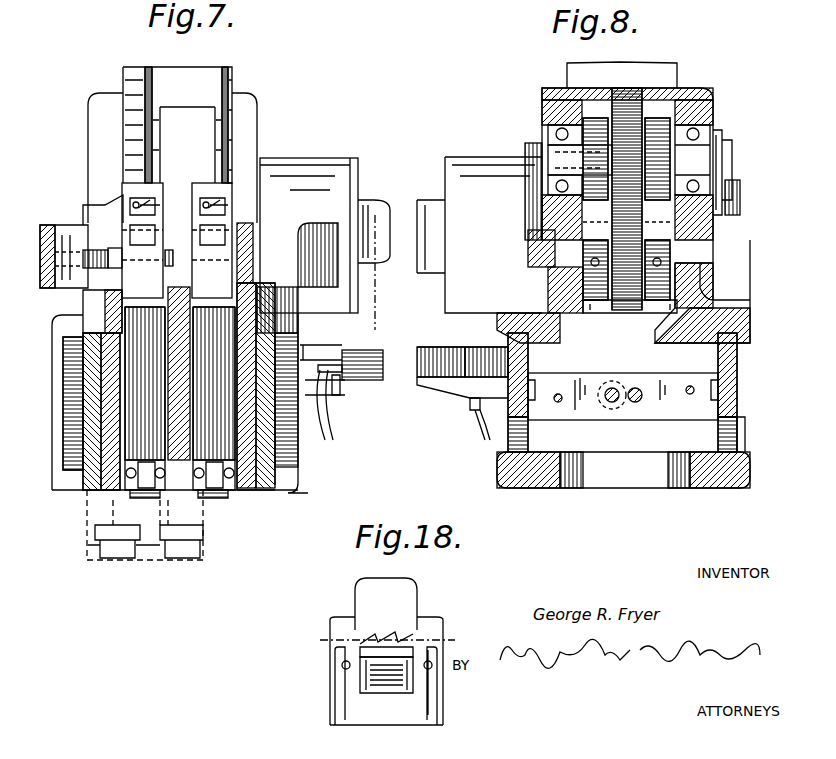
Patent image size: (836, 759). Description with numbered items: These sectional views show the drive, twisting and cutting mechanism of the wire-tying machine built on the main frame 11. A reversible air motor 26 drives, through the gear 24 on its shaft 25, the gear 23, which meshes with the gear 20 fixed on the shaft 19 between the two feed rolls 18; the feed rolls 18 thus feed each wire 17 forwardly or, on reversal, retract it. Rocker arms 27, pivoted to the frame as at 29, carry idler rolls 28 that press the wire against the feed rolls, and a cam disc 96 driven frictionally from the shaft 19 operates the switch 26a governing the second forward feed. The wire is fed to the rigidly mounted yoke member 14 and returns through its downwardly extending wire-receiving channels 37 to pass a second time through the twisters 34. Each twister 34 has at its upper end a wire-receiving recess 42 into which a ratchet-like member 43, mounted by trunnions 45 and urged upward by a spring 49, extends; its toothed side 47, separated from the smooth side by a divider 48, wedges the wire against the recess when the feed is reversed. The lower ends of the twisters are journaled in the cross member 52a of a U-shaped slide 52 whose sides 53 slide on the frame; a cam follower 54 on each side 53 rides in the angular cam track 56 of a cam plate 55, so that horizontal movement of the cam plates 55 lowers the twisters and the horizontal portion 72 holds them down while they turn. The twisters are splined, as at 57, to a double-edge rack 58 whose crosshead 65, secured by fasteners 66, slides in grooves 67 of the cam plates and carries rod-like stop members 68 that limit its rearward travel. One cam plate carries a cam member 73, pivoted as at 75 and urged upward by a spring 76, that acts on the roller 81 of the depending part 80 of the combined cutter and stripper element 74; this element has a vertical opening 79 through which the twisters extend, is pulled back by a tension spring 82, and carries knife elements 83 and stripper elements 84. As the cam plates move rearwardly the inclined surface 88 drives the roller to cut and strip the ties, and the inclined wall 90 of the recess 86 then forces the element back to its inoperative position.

In FIG. 7, the main frame 11 is at (56, 470).
In FIG. 8, the main frame 11 is at (728, 478).
In FIG. 7, the yoke member 14 is at (232, 80).
In FIG. 8, the yoke member 14 is at (670, 76).
In FIG. 18, the wire 17 is at (330, 625).
In FIG. 8, the feed rolls 18 is at (592, 118).
In FIG. 8, the shaft 19 is at (560, 157).
In FIG. 8, the gear 20 is at (628, 100).
In FIG. 8, the gear 23 is at (626, 300).
In FIG. 8, the gear 24 is at (600, 270).
In FIG. 8, the shaft 25 is at (555, 270).
In FIG. 7, the air motor 26 is at (318, 170).
In FIG. 8, the air motor 26 is at (464, 162).
In FIG. 8, the switch 26a is at (725, 137).
In FIG. 8, the rocker arms 27 is at (530, 256).
In FIG. 8, the idler rolls 28 is at (577, 315).
In FIG. 8, the pivot 29 is at (525, 205).
In FIG. 7, the twisters 34 is at (267, 274).
In FIG. 18, the twisters 34 is at (340, 712).
In FIG. 7, the wire-receiving channels 37 is at (148, 128).
In FIG. 7, the wire-receiving recess 42 is at (160, 200).
In FIG. 18, the wire-receiving recess 42 is at (386, 604).
In FIG. 18, the ratchet-like member 43 is at (415, 688).
In FIG. 18, the trunnions 45 is at (386, 690).
In FIG. 18, the toothed side 47 is at (388, 640).
In FIG. 18, the divider 48 is at (408, 640).
In FIG. 18, the spring 49 is at (362, 688).
In FIG. 7, the slide 52 is at (115, 492).
In FIG. 7, the cross member 52a is at (260, 490).
In FIG. 7, the sides 53 is at (110, 448).
In FIG. 7, the cam follower 54 is at (288, 378).
In FIG. 7, the cam plates 55 is at (70, 462).
In FIG. 8, the cam plates 55 is at (528, 356).
In FIG. 8, the cam track 56 is at (529, 444).
In FIG. 7, the spline 57 is at (180, 488).
In FIG. 7, the rack 58 is at (172, 410).
In FIG. 8, the rack 58 is at (640, 403).
In FIG. 8, the crosshead 65 is at (590, 412).
In FIG. 8, the fasteners 66 is at (637, 388).
In FIG. 8, the grooves 67 is at (513, 392).
In FIG. 8, the stop members 68 is at (560, 394).
In FIG. 8, the horizontal portion 72 is at (740, 424).
In FIG. 7, the cam member 73 is at (347, 396).
In FIG. 8, the cam member 73 is at (452, 393).
In FIG. 7, the cutter and stripper element 74 is at (40, 257).
In FIG. 7, the pivot 75 is at (340, 415).
In FIG. 8, the pivot 75 is at (470, 410).
In FIG. 7, the spring 76 is at (335, 430).
In FIG. 8, the spring 76 is at (485, 440).
In FIG. 7, the vertical opening 79 is at (60, 228).
In FIG. 7, the depending part 80 is at (322, 312).
In FIG. 7, the roller 81 is at (348, 357).
In FIG. 7, the tension spring 82 is at (300, 283).
In FIG. 7, the knife elements 83 is at (112, 200).
In FIG. 7, the stripper elements 84 is at (88, 270).
In FIG. 7, the recess 86 is at (350, 385).
In FIG. 8, the inclined surface 88 is at (490, 358).
In FIG. 8, the inclined wall 90 is at (440, 360).
In FIG. 8, the cam disc 96 is at (724, 145).